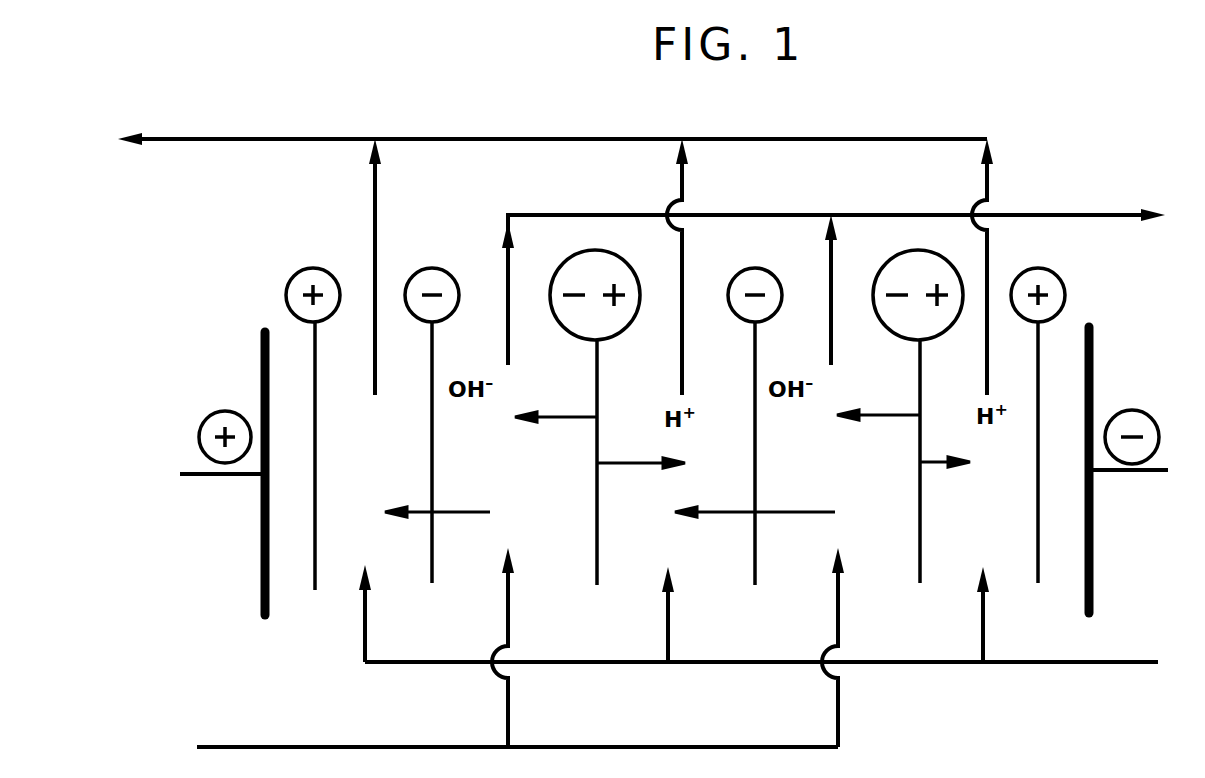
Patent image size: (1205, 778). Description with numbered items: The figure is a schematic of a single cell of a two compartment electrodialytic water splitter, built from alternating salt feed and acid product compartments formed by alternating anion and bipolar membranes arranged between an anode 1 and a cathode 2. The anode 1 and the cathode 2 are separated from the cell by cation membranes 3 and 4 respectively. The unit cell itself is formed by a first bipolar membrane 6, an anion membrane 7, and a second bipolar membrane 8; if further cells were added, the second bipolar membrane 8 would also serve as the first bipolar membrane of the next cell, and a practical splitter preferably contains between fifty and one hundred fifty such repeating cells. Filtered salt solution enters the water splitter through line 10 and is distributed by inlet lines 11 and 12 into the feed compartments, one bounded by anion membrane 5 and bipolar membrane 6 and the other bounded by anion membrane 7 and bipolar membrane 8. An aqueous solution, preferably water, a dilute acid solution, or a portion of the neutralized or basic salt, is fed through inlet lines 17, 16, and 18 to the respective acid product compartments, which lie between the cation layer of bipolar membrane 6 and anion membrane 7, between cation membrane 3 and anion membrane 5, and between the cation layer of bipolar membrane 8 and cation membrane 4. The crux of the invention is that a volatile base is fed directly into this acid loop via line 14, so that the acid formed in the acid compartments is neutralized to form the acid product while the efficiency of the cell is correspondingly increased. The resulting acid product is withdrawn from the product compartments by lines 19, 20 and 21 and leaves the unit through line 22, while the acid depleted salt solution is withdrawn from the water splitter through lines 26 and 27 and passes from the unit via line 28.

The anode 1 is at (262, 400).
The cathode 2 is at (1093, 352).
The cation membrane 3 is at (318, 414).
The cation membrane 4 is at (1036, 358).
The anion membrane 5 is at (430, 360).
The first bipolar membrane 6 is at (595, 364).
The anion membrane 7 is at (754, 345).
The second bipolar membrane 8 is at (918, 362).
The line 10 is at (226, 745).
The inlet line 11 is at (506, 612).
The inlet line 12 is at (836, 612).
The line 14 is at (1128, 660).
The inlet line 16 is at (363, 628).
The inlet line 17 is at (666, 612).
The inlet line 18 is at (981, 612).
The line 19 is at (373, 178).
The line 20 is at (680, 170).
The line 21 is at (985, 168).
The line 22 is at (206, 139).
The line 26 is at (500, 266).
The line 27 is at (828, 256).
The line 28 is at (1098, 213).